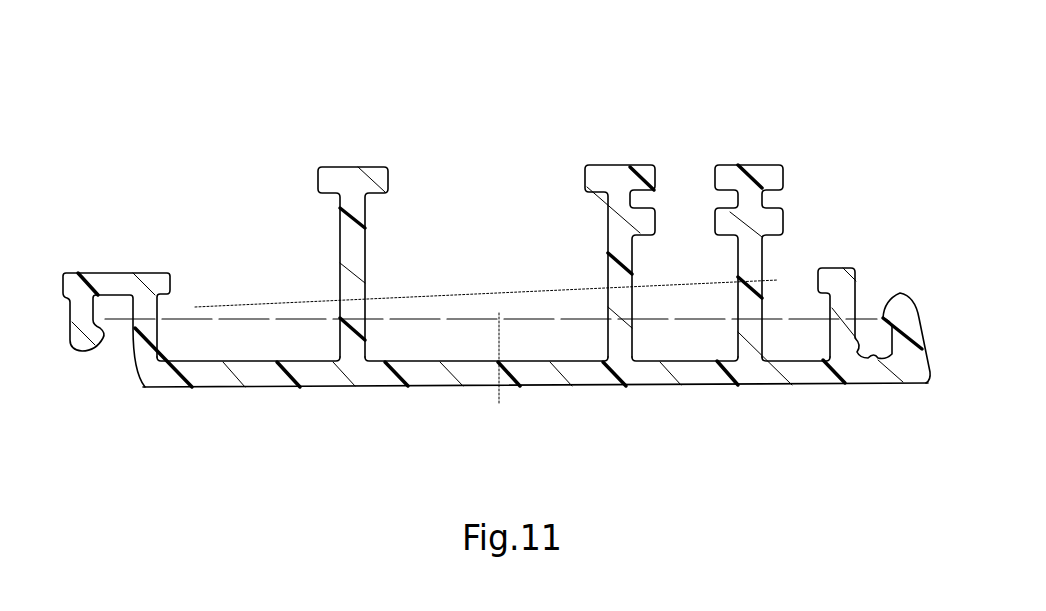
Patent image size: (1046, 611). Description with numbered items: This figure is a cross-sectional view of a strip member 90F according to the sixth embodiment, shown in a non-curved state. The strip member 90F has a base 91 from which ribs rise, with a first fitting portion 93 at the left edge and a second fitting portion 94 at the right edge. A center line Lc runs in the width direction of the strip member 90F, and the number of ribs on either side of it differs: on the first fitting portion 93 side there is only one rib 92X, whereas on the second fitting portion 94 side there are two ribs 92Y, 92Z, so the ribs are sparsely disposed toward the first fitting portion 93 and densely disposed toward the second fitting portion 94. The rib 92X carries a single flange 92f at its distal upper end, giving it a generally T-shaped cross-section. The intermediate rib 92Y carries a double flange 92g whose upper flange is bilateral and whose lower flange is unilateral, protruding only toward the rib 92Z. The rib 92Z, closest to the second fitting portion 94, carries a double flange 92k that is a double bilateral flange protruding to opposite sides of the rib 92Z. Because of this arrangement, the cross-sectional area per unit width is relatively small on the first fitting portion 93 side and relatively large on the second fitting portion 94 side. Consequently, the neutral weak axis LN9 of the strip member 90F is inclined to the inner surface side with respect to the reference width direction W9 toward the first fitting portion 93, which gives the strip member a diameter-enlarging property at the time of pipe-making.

The strip member 90F is at (117, 143).
The base plate 91 is at (587, 386).
The single flange 92f is at (388, 178).
The double flange 92g is at (585, 177).
The rib 92Z is at (753, 165).
The rib 92X is at (340, 248).
The rib 92Y is at (607, 210).
The double flange 92k is at (787, 215).
The first fitting portion 93 is at (72, 343).
The second fitting portion 94 is at (900, 292).
The reference width direction W9 is at (445, 322).
The neutral weak axis LN9 is at (465, 293).
The center line Lc is at (498, 397).